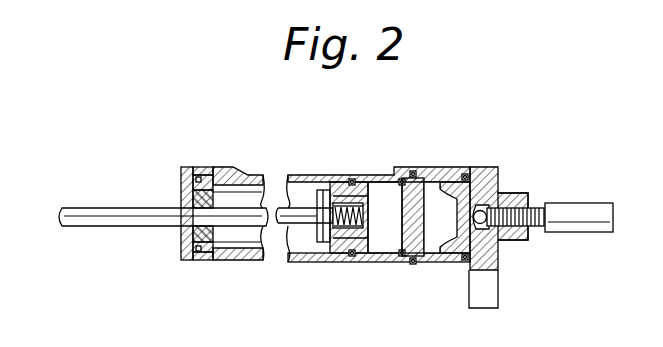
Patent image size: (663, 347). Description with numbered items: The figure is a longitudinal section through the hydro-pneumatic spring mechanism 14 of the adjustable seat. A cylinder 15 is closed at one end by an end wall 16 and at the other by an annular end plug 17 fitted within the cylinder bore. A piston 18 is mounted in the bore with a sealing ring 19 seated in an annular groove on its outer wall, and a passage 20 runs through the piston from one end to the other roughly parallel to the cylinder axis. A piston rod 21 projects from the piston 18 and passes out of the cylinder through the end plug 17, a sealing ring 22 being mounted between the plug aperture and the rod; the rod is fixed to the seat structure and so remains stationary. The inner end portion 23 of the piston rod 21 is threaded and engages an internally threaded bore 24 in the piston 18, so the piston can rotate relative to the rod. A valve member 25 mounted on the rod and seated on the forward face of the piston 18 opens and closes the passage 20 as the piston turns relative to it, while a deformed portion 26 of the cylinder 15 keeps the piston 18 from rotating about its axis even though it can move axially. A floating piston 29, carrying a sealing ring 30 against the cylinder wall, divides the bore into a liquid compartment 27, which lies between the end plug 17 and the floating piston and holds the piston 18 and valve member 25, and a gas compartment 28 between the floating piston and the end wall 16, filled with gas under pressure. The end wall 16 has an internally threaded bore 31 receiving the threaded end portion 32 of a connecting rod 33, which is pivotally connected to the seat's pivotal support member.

The hydro-pneumatic spring mechanism 14 is at (270, 276).
The cylinder 15 is at (315, 262).
The end wall 16 is at (489, 170).
The annular end plug 17 is at (181, 180).
The piston 18 is at (381, 256).
The sealing ring 19 is at (362, 178).
The passage 20 is at (350, 232).
The piston rod 21 is at (136, 210).
The sealing ring 22 is at (222, 258).
The inner end portion 23 is at (370, 214).
The internally threaded bore 24 is at (347, 180).
The valve member 25 is at (325, 190).
The deformed portion 26 is at (247, 172).
The liquid compartment 27 is at (298, 240).
The gas compartment 28 is at (437, 194).
The floating piston 29 is at (412, 186).
The sealing ring 30 is at (423, 172).
The internally threaded bore 31 is at (512, 240).
The threaded end portion 32 is at (535, 206).
The connecting rod 33 is at (588, 233).